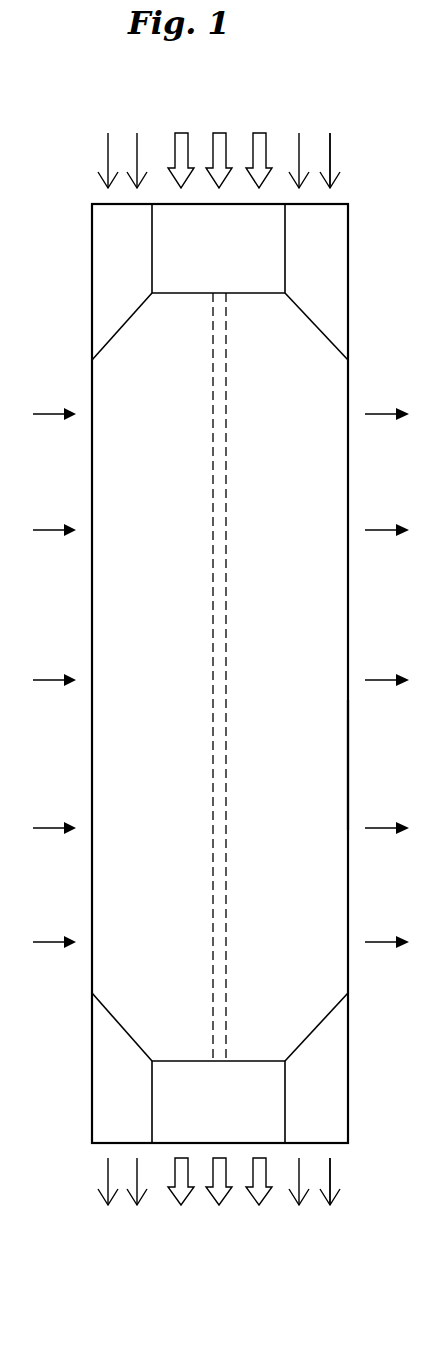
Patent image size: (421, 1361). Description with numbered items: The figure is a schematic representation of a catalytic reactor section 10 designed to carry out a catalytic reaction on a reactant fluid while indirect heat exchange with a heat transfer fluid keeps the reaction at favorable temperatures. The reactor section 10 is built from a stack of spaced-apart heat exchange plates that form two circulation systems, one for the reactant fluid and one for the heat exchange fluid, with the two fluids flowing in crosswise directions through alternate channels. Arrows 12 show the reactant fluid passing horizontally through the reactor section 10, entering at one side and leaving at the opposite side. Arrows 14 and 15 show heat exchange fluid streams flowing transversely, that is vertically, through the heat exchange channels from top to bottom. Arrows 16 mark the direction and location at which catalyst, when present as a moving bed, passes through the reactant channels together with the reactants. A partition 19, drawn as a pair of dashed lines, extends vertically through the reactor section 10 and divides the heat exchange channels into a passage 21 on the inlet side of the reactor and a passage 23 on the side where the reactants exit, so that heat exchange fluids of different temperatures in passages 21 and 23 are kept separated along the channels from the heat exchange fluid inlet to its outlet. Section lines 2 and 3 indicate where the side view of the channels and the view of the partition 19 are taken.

The section line 2- 2 is at (33, 200).
The section line 3- 3 is at (170, 62).
The catalytic reactor section 10 is at (349, 598).
The reactant fluid flow arrows 12 is at (60, 410).
The heat exchange fluid stream arrows 14 is at (330, 146).
The heat exchange fluid stream arrows 15 is at (108, 153).
The catalyst flow arrows 16 is at (226, 145).
The partition 19 is at (213, 703).
The passage 21 is at (152, 250).
The passage 23 is at (317, 760).